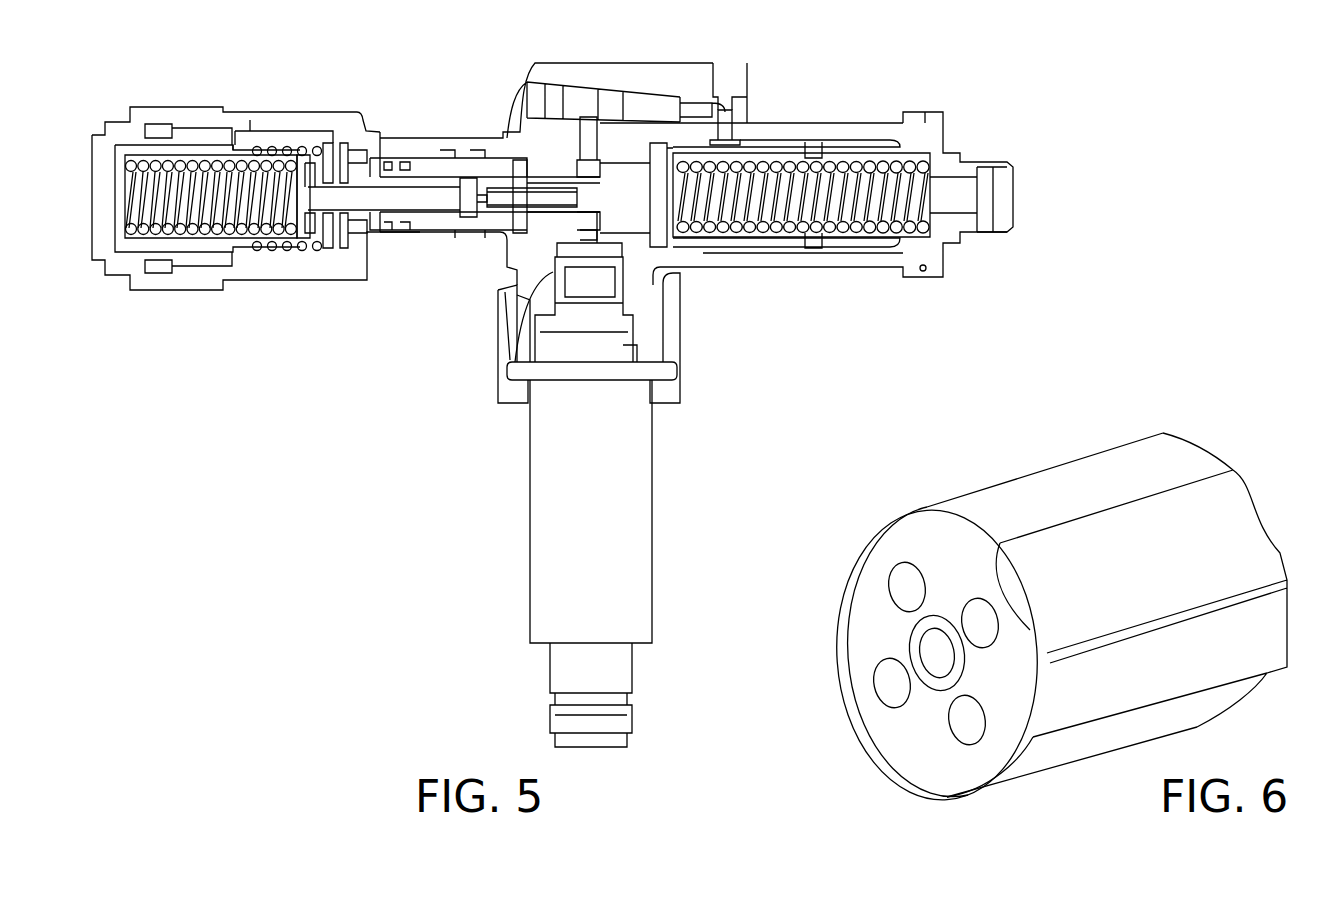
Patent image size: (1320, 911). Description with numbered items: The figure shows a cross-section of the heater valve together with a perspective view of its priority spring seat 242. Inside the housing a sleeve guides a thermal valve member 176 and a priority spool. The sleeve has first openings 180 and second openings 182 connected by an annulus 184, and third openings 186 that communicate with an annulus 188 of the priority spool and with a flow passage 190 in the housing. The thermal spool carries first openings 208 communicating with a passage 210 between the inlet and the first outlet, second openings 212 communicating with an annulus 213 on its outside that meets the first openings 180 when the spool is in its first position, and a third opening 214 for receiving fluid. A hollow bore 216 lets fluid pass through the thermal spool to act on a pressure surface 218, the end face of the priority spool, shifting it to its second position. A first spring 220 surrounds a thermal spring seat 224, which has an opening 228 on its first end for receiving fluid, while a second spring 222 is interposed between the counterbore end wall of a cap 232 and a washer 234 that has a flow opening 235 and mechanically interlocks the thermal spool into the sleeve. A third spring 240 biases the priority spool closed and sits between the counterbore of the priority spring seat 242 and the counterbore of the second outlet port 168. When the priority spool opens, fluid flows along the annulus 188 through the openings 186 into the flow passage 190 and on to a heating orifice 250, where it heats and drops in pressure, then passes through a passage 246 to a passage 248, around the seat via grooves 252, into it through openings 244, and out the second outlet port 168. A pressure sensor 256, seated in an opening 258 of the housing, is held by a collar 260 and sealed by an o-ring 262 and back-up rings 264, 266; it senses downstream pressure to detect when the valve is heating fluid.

In FIG. 5, the second outlet port 168 is at (940, 272).
In FIG. 5, the thermal valve member 176 is at (415, 122).
In FIG. 5, the first openings 180 is at (445, 240).
In FIG. 5, the second openings 182 is at (585, 115).
In FIG. 5, the annulus 184 is at (506, 132).
In FIG. 5, the third openings 186 is at (522, 255).
In FIG. 5, the annulus 188 is at (495, 235).
In FIG. 5, the flow passage 190 is at (597, 135).
In FIG. 5, the first openings 208 is at (352, 252).
In FIG. 5, the passage 210 is at (250, 137).
In FIG. 5, the second openings 212 is at (450, 160).
In FIG. 5, the annulus 213 is at (405, 222).
In FIG. 5, the third opening 214 is at (280, 250).
In FIG. 5, the hollow bore 216 is at (465, 218).
In FIG. 5, the pressure surface 218 is at (490, 186).
In FIG. 5, the first spring 220 is at (312, 248).
In FIG. 5, the second spring 222 is at (218, 238).
In FIG. 5, the thermal spring seat 224 is at (188, 160).
In FIG. 5, the opening 228 is at (120, 188).
In FIG. 5, the cap 232 is at (118, 290).
In FIG. 5, the washer 234 is at (346, 150).
In FIG. 5, the opening 235 is at (280, 150).
In FIG. 5, the third spring 240 is at (772, 238).
In FIG. 5, the priority spring seat 242 is at (712, 240).
In FIG. 6, the priority spring seat 242 is at (849, 487).
In FIG. 6, the openings 244 is at (962, 732).
In FIG. 5, the passage 246 is at (732, 127).
In FIG. 5, the passage 248 is at (815, 250).
In FIG. 5, the heating orifice 250 is at (657, 100).
In FIG. 6, the grooves 252 is at (1245, 470).
In FIG. 5, the pressure sensor 256 is at (652, 494).
In FIG. 5, the opening 258 is at (545, 365).
In FIG. 5, the collar 260 is at (683, 396).
In FIG. 5, the o-ring 262 is at (520, 362).
In FIG. 5, the back-up ring 264 is at (560, 268).
In FIG. 5, the back-up ring 266 is at (560, 295).